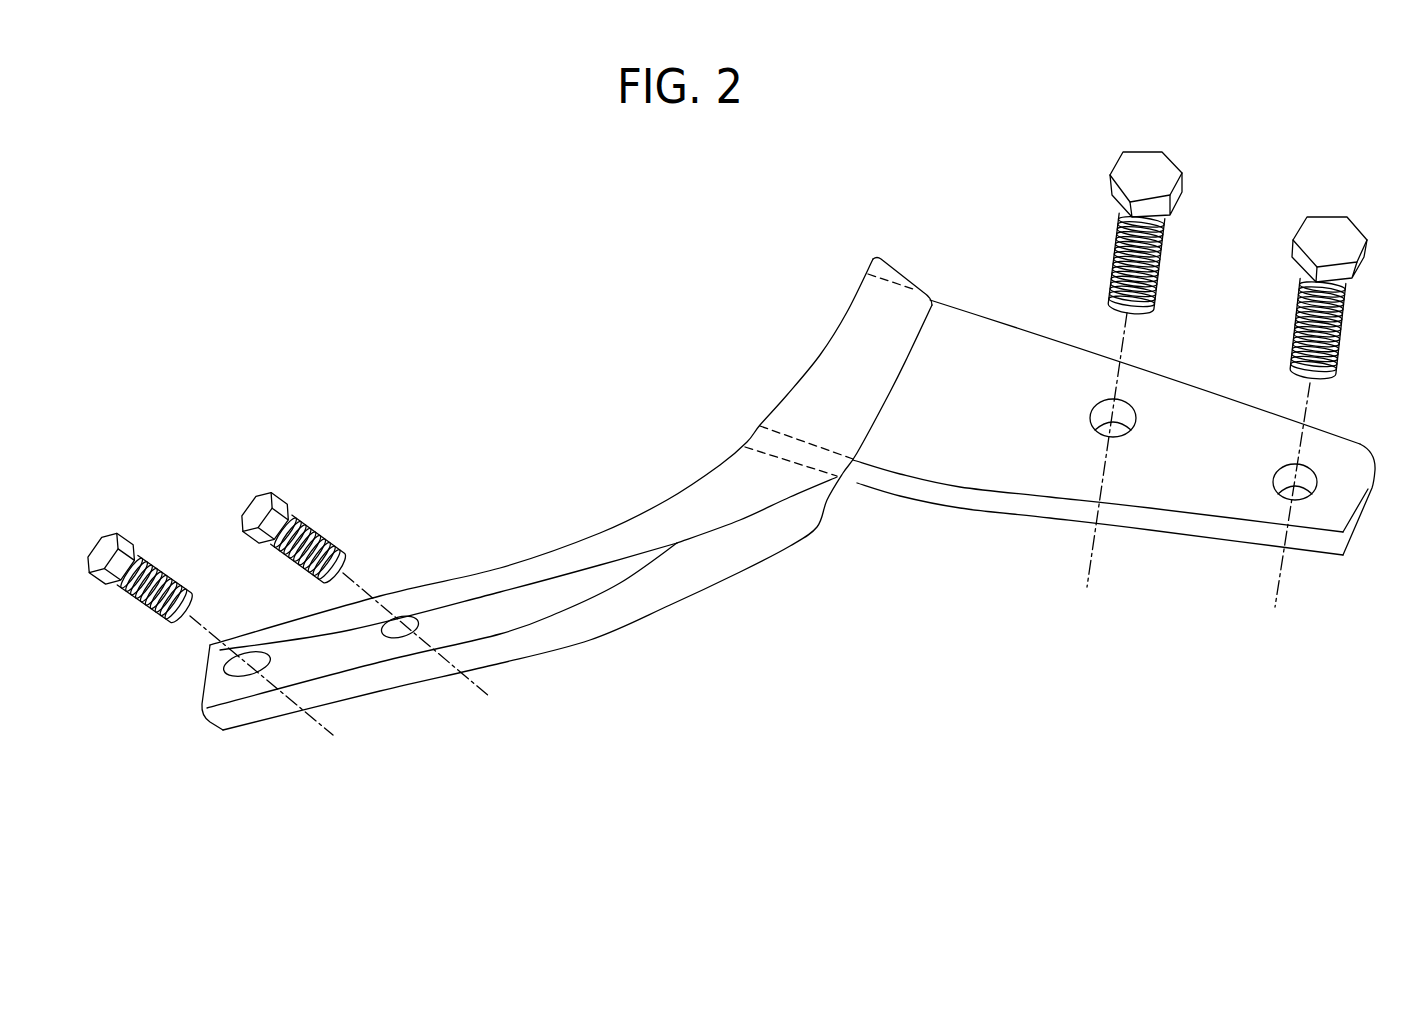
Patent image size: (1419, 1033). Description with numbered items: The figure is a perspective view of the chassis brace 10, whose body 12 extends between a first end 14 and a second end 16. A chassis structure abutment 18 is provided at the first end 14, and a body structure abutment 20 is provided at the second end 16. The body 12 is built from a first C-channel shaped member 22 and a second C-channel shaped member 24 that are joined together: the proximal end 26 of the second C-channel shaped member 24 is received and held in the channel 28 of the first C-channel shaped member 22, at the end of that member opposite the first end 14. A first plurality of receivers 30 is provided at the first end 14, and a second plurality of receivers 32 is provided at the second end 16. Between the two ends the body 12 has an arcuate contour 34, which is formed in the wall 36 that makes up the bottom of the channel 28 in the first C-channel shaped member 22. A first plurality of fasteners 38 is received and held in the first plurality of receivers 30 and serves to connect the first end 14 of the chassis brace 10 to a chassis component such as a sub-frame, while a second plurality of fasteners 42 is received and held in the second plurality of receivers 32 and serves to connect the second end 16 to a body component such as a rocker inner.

The chassis brace 10 is at (993, 197).
The body 12 is at (300, 762).
The first end 14 is at (213, 723).
The second end 16 is at (1350, 547).
The chassis structure abutment 18 is at (272, 613).
The body structure abutment 20 is at (1162, 583).
The first C-channel shaped member 22 is at (603, 532).
The second C-channel shaped member 24 is at (1050, 512).
The proximal end 26 is at (833, 365).
The channel 28 is at (713, 543).
The first plurality of receivers 30 is at (267, 671).
The second plurality of receivers 32 is at (1280, 473).
The arcuate contour 34 is at (631, 494).
The wall 36 is at (523, 603).
The first plurality of fasteners 38 is at (243, 508).
The second plurality of fasteners 42 is at (1172, 172).